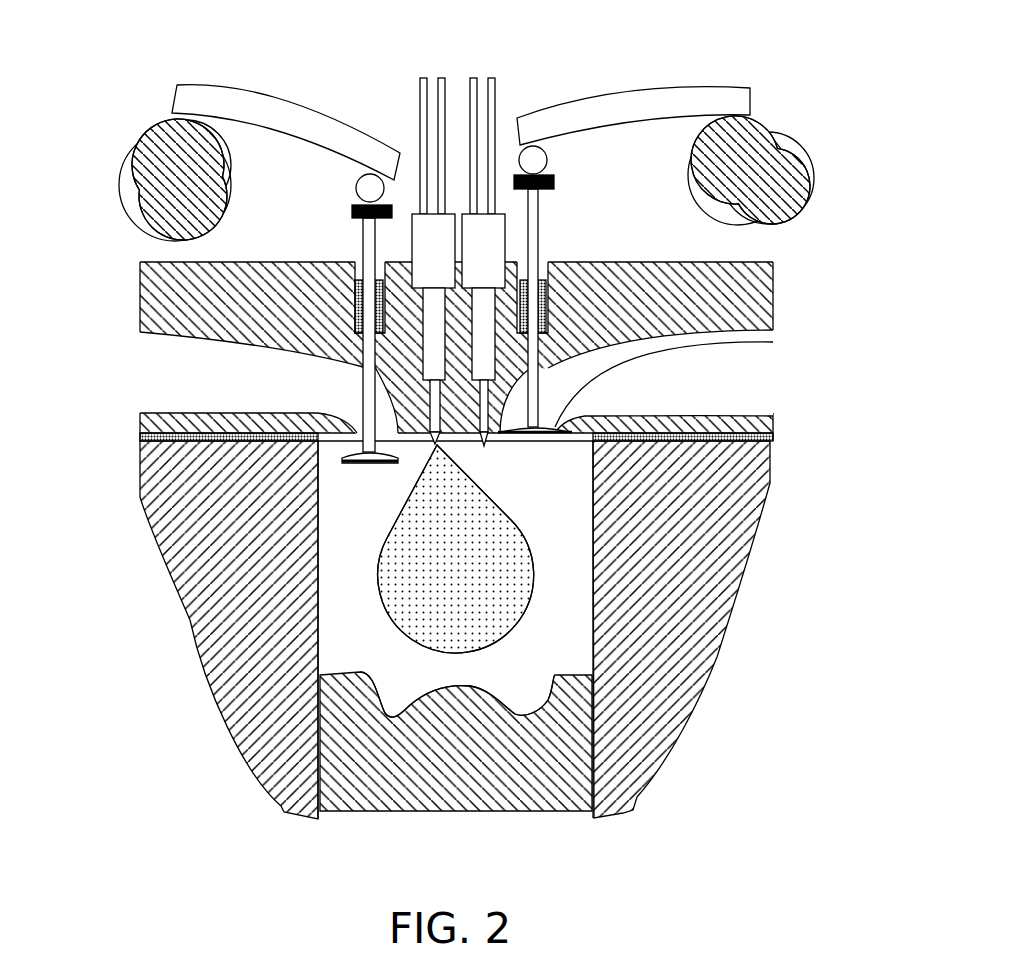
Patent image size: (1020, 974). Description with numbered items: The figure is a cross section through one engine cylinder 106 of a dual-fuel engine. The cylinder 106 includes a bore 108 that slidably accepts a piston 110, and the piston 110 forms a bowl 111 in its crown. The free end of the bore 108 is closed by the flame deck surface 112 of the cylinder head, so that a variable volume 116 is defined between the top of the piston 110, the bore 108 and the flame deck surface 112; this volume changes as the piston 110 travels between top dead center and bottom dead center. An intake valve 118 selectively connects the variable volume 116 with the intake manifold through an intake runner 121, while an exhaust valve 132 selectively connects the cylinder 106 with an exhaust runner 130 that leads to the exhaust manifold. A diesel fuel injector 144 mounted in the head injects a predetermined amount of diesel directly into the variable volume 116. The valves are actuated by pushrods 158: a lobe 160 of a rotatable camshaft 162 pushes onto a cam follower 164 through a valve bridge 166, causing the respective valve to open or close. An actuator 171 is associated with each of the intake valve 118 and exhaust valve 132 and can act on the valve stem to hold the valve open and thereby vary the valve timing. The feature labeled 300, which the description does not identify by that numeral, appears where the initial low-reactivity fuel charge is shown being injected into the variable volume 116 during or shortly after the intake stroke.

The engine cylinder 106 is at (160, 645).
The bore 108 is at (593, 563).
The piston 110 is at (497, 768).
The bowl 111 is at (522, 685).
The flame deck surface 112 is at (583, 443).
The variable volume 116 is at (378, 664).
The intake valve 118 is at (360, 447).
The intake runner 121 is at (177, 373).
The exhaust runner 130 is at (737, 387).
The exhaust valve 132 is at (690, 348).
The diesel fuel injector 144 is at (428, 267).
The pushrod 158 is at (367, 248).
The lobe 160 is at (153, 153).
The camshaft 162 is at (120, 187).
The cam follower 164 is at (370, 188).
The valve bridge 166 is at (268, 112).
The actuator 171 is at (352, 211).
The fuel spray 300 is at (436, 573).